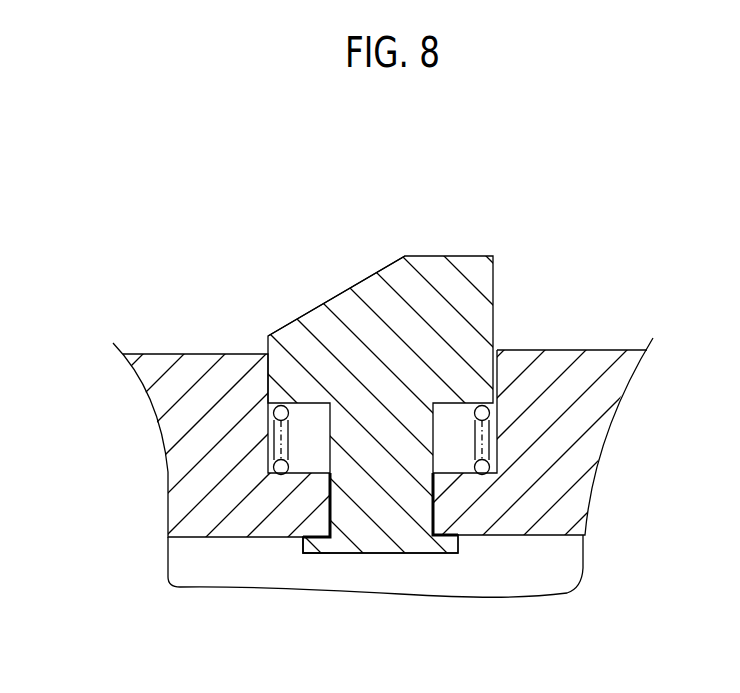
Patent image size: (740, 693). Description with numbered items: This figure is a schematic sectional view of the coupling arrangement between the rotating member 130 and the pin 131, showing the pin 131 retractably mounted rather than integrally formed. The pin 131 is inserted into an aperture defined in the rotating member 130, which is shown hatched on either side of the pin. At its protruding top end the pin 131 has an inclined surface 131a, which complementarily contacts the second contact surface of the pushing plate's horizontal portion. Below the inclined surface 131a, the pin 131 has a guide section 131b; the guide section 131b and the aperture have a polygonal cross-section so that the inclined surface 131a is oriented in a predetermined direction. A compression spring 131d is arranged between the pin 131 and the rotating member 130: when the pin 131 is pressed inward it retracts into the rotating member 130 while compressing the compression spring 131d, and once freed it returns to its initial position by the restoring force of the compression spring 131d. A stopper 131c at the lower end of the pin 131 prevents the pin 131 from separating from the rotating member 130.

The rotating member 130 is at (570, 360).
The pin 131 is at (458, 235).
The inclined surface 131a is at (338, 294).
The guide section 131b is at (402, 507).
The stopper 131c is at (318, 547).
The compression spring 131d is at (280, 465).